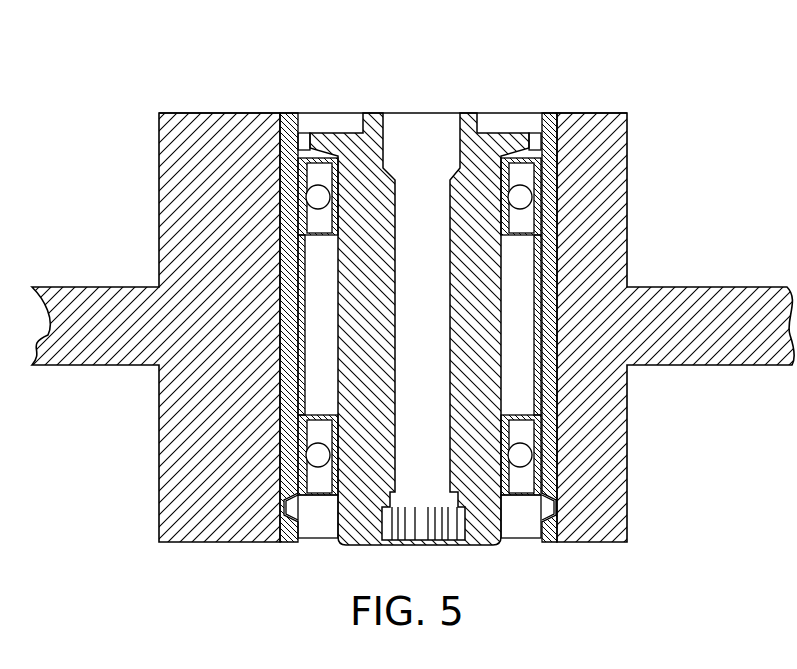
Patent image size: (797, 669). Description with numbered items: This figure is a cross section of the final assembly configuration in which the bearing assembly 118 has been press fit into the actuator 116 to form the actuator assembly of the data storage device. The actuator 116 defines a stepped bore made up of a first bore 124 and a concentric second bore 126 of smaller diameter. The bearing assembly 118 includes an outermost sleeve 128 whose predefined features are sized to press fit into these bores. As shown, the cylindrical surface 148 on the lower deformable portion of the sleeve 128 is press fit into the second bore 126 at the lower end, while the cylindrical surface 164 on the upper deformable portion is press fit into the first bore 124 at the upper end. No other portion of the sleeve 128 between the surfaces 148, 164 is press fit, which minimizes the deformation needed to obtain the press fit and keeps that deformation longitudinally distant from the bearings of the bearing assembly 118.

The actuator 116 is at (398, 334).
The bearing assembly 118 is at (404, 100).
The first bore 124 is at (541, 113).
The second bore 126 is at (545, 542).
The sleeve 128 is at (560, 372).
The cylindrical surface 148 is at (281, 521).
The cylindrical surface 164 is at (285, 142).